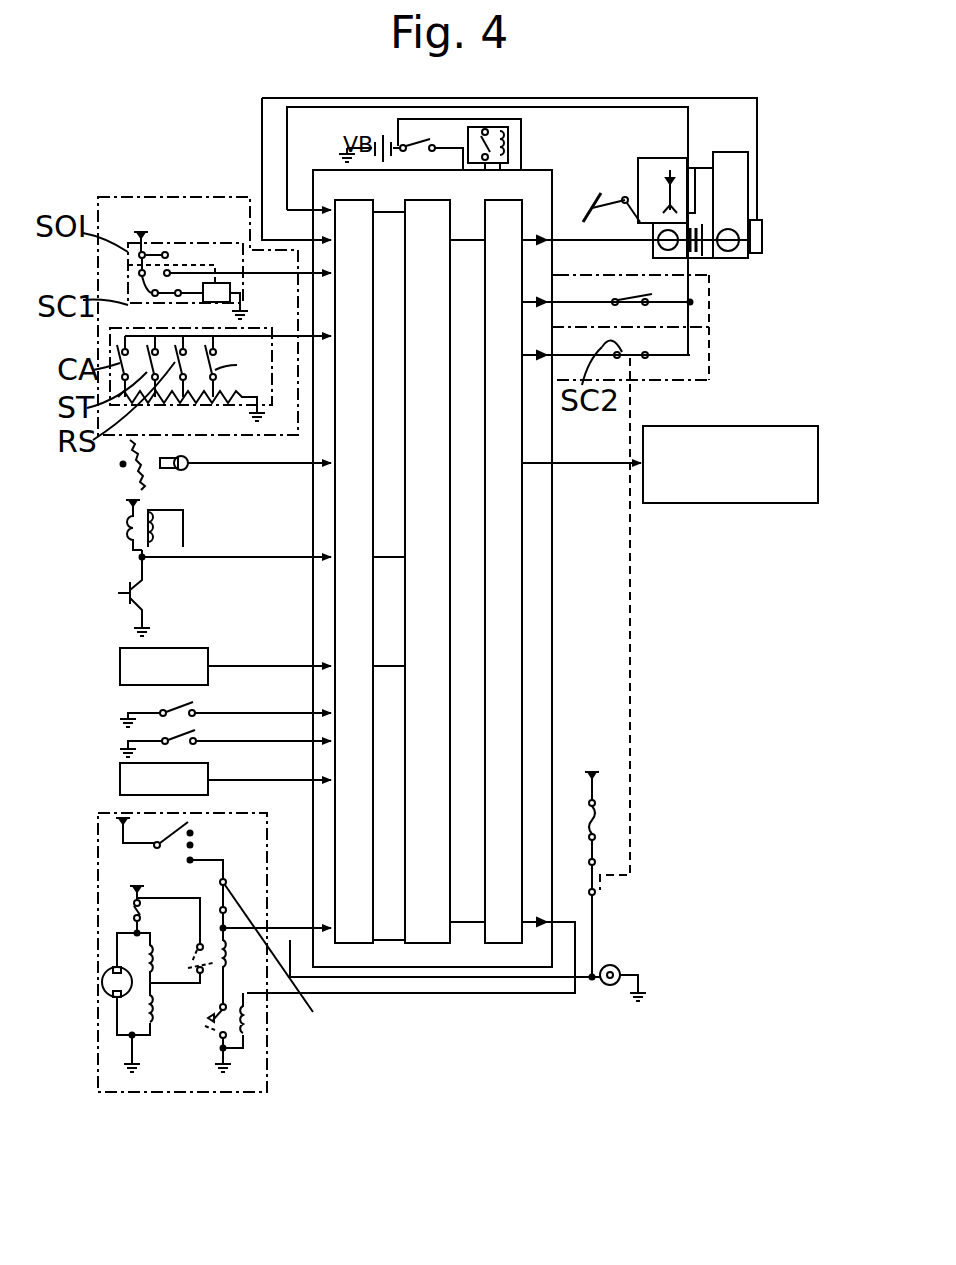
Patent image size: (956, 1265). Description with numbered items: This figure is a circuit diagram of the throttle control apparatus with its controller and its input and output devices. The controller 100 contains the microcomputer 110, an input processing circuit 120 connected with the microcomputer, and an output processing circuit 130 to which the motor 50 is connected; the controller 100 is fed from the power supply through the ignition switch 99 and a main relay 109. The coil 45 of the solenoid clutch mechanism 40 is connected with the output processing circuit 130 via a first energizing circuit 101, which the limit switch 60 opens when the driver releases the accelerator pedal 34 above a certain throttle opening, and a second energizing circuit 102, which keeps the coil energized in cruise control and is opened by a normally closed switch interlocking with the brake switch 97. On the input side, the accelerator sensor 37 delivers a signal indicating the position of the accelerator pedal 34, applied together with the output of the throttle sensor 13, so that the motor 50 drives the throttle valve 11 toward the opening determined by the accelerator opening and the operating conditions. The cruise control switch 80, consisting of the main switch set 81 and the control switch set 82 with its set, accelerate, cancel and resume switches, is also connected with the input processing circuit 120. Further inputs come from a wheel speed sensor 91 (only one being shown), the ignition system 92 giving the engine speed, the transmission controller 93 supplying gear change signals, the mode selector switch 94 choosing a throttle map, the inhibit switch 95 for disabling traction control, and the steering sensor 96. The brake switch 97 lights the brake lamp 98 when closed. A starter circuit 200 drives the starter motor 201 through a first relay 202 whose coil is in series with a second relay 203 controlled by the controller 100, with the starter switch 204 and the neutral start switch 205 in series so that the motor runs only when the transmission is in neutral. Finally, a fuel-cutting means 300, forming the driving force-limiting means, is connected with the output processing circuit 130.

The throttle valve 11 is at (752, 190).
The throttle sensor 13 is at (755, 255).
The accelerator pedal 34 is at (628, 190).
The accelerator sensor 37 is at (683, 175).
The solenoid clutch mechanism 40 is at (700, 264).
The coil 45 is at (668, 252).
The motor 50 is at (636, 190).
The limit switch 60 is at (620, 298).
The cruise control switch 80 is at (128, 197).
The main switch set 81 is at (172, 243).
The control switch set 82 is at (248, 327).
The wheel speed sensor 91 is at (188, 470).
The ignition system 92 is at (190, 537).
The transmission controller 93 is at (210, 655).
The mode selector switch 94 is at (205, 700).
The inhibit switch 95 is at (200, 733).
The steering sensor 96 is at (210, 770).
The brake switch 97 is at (603, 884).
The brake lamp 98 is at (618, 963).
The ignition switch 99 is at (423, 137).
The controller 100 is at (553, 683).
The first energizing circuit 101 is at (712, 327).
The second energizing circuit 102 is at (712, 362).
The main relay 109 is at (495, 127).
The microcomputer 110 is at (352, 200).
The input processing circuit 120 is at (423, 200).
The output processing circuit 130 is at (541, 531).
The starter circuit 200 is at (232, 814).
The starter motor 201 is at (105, 992).
The first relay 202 is at (230, 957).
The second relay 203 is at (220, 1035).
The starter switch 204 is at (200, 843).
The neutral start switch 205 is at (282, 947).
The fuel-cutting means 300 is at (700, 503).